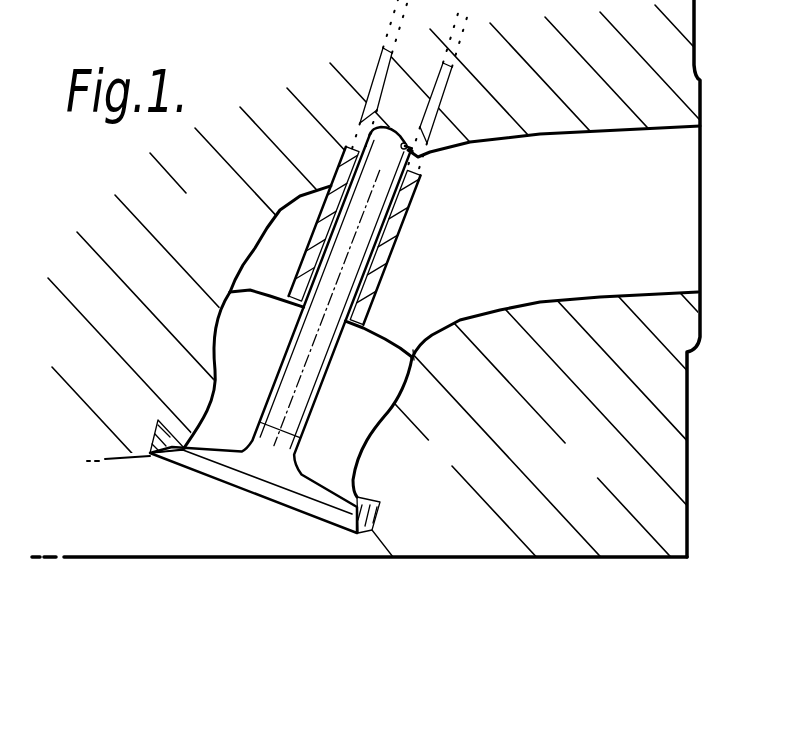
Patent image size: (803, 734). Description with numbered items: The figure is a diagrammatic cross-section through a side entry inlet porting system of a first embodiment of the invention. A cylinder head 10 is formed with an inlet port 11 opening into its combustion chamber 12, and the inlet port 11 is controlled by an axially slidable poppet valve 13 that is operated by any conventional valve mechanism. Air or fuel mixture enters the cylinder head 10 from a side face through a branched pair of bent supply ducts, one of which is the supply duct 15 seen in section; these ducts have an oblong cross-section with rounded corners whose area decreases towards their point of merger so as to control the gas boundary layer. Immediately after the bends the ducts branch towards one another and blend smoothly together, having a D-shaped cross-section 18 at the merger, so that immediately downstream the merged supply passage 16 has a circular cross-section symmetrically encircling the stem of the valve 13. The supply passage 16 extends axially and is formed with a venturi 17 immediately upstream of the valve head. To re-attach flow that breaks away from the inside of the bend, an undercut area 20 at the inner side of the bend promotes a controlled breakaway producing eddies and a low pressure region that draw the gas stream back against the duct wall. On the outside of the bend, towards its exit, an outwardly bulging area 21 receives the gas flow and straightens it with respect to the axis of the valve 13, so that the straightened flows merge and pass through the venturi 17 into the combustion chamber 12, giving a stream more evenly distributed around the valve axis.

The cylinder head 10 is at (585, 475).
The inlet port 11 is at (157, 421).
The combustion chamber 12 is at (208, 537).
The poppet valve 13 is at (386, 203).
The supply duct 15 is at (643, 220).
The supply passage 16 is at (260, 363).
The venturi 17 is at (365, 447).
The D-shaped cross-section 18 is at (398, 343).
The undercut area 20 is at (415, 356).
The outwardly bulging area 21 is at (232, 268).